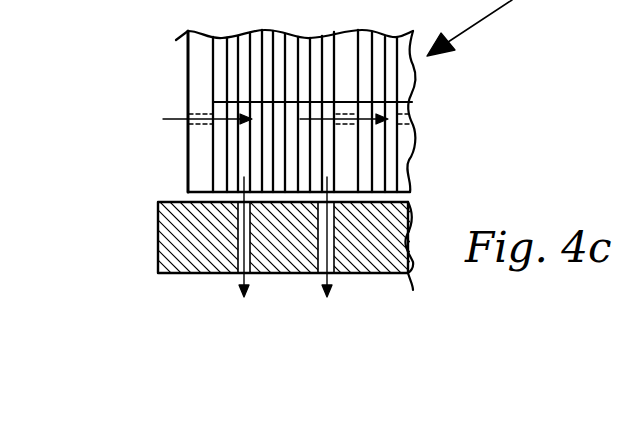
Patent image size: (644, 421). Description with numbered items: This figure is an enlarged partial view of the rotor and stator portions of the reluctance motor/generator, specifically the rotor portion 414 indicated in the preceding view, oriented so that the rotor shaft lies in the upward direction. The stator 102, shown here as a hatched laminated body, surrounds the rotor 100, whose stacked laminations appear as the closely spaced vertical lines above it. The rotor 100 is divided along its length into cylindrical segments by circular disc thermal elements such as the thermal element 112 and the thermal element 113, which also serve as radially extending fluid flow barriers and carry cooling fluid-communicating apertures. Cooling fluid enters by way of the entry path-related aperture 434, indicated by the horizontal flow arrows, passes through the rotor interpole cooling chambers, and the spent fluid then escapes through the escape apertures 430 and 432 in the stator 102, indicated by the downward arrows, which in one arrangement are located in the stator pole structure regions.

The rotor 100 is at (438, 142).
The stator member 102 is at (157, 238).
The thermal element 112 is at (200, 179).
The thermal element 113 is at (345, 183).
The rotor portion 414 is at (643, 6).
The escape aperture 430 is at (240, 276).
The escape aperture 432 is at (320, 277).
The aperture 434 is at (183, 121).